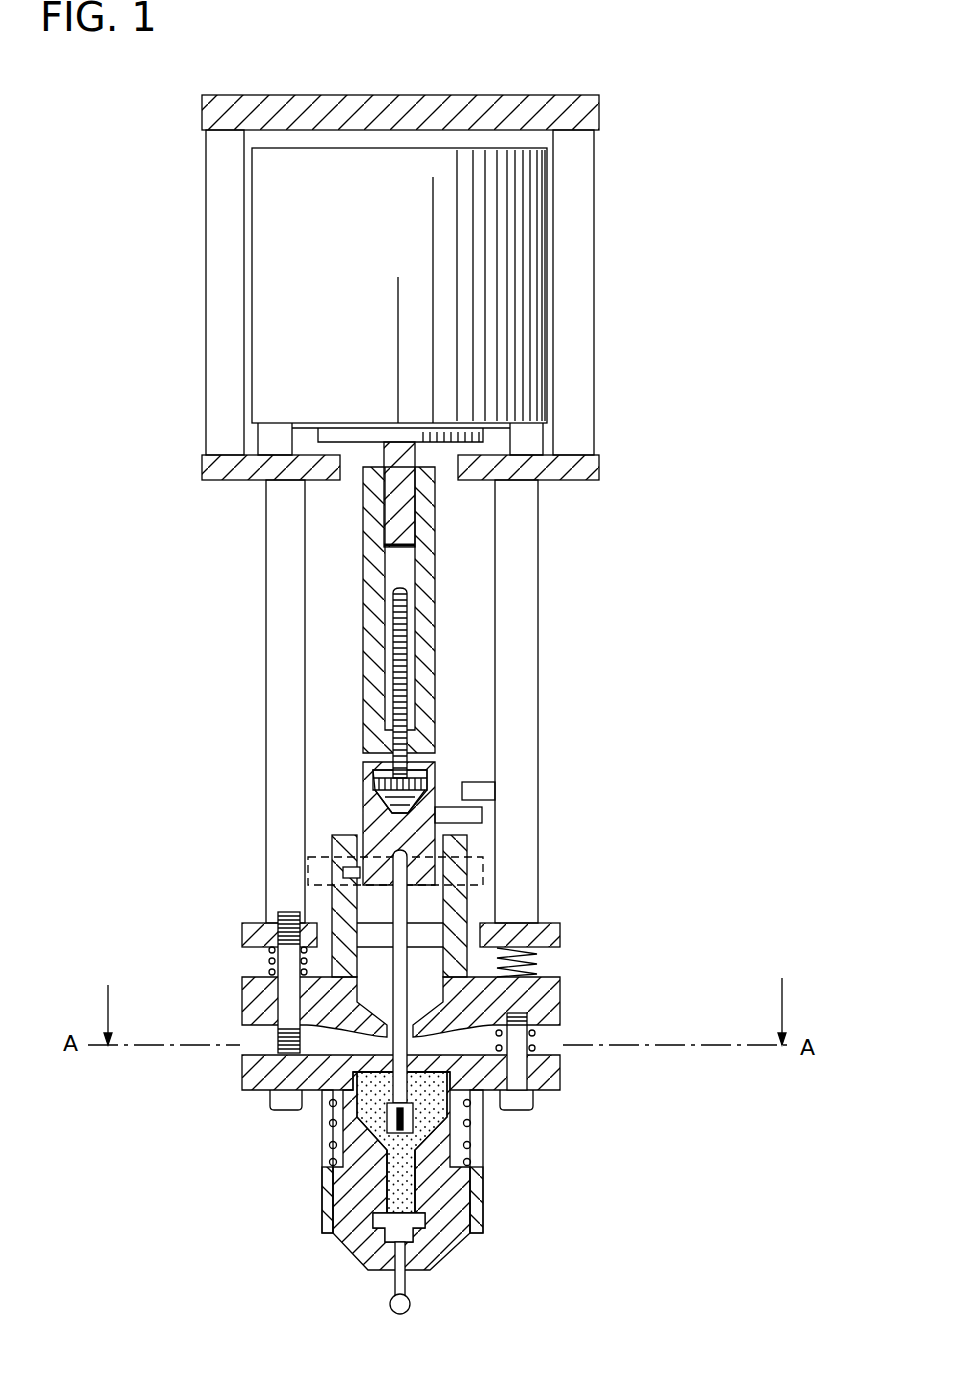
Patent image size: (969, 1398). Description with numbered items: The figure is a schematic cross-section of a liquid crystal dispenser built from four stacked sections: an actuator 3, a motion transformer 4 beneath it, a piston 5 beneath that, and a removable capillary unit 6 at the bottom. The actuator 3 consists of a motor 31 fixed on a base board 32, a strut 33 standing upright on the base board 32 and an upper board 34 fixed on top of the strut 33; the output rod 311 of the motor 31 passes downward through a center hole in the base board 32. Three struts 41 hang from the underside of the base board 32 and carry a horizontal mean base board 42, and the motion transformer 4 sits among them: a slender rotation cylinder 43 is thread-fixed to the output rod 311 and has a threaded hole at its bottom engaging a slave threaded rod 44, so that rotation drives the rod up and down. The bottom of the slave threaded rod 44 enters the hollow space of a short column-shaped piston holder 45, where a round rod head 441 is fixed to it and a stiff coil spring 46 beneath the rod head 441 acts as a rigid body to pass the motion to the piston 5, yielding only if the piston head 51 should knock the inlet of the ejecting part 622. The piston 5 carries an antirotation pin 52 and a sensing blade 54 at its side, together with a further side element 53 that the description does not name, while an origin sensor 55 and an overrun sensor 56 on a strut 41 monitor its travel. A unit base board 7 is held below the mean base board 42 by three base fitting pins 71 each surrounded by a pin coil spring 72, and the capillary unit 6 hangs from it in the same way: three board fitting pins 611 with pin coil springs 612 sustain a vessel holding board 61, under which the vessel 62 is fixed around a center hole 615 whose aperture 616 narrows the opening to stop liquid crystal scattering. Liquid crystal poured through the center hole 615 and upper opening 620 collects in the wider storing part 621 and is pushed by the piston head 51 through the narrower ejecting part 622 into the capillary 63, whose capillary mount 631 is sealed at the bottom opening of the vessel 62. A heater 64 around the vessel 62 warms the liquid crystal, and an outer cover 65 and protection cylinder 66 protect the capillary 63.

The actuator 3 is at (404, 256).
The motor 31 is at (525, 290).
The output rod 311 is at (415, 519).
The base board 32 is at (592, 461).
The strut 33 is at (230, 355).
The upper board 34 is at (462, 94).
The motion transformer 4 is at (384, 696).
The struts 41 is at (522, 655).
The mean base board 42 is at (552, 934).
The rotation cylinder 43 is at (427, 572).
The slave threaded rod 44 is at (407, 610).
The rod head 441 is at (433, 767).
The piston holder 45 is at (428, 831).
The coil spring 46 is at (415, 800).
The piston 5 is at (402, 894).
The piston head 51 is at (415, 1115).
The antirotation pin 52 is at (333, 871).
The guide block 53 is at (330, 900).
The sensing blade 54 is at (482, 812).
The origin sensor 55 is at (479, 781).
The overrun sensor 56 is at (478, 876).
The capillary unit 6 is at (427, 1083).
The vessel holding board 61 is at (547, 1082).
The board fitting pins 611 is at (530, 1100).
The pin coil spring 612 is at (542, 1050).
The center hole 615 is at (250, 1075).
The aperture 616 is at (540, 1045).
The vessel 62 is at (477, 1200).
The upper opening 620 is at (370, 1070).
The storing part 621 is at (370, 1098).
The ejecting part 622 is at (393, 1158).
The capillary 63 is at (393, 1287).
The capillary mount 631 is at (365, 1243).
The heater 64 is at (468, 1155).
The outer cover 65 is at (322, 1198).
The protection cylinder 66 is at (450, 1250).
The unit base board 7 is at (410, 982).
The base fitting pins 71 is at (280, 1000).
The pin coil spring 72 is at (267, 960).